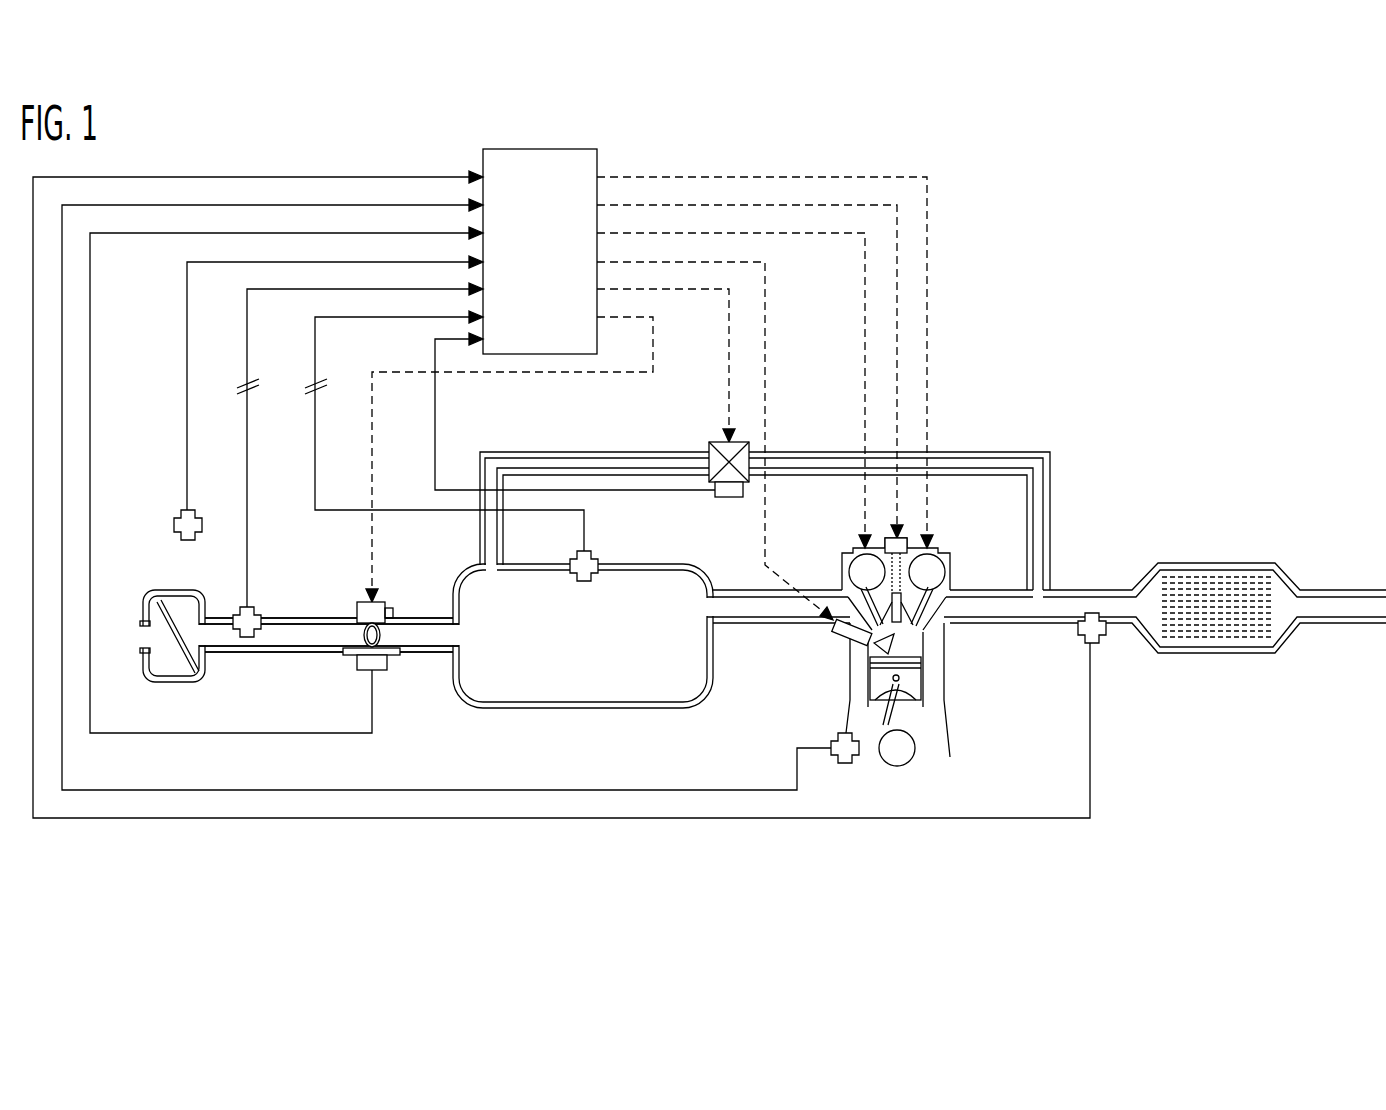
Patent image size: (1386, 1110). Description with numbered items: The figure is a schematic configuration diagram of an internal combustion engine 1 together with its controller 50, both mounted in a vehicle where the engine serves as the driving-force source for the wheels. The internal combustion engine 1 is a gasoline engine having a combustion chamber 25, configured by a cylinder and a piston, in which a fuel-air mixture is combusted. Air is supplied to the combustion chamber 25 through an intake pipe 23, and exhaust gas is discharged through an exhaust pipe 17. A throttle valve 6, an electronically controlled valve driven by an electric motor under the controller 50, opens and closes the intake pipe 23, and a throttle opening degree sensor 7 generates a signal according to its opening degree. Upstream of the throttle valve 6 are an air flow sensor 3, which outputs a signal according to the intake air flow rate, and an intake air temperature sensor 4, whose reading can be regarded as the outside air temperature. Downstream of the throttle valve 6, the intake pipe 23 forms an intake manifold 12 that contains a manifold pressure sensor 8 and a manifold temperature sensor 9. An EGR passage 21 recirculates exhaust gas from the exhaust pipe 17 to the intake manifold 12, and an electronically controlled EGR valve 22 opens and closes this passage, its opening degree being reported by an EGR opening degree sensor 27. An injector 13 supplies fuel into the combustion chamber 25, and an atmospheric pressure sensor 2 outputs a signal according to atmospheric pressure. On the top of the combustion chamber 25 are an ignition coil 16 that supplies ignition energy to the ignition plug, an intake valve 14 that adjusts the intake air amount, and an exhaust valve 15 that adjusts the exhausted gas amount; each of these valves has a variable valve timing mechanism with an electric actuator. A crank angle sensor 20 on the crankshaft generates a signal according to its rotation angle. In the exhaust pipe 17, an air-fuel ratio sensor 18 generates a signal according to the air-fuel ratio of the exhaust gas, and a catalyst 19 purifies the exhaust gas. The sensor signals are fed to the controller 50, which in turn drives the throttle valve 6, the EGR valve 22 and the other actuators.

The internal combustion engine 1 is at (923, 556).
The atmospheric pressure sensor 2 is at (183, 507).
The air flow sensor 3 is at (287, 587).
The intake air temperature sensor 4 is at (263, 610).
The throttle valve 6 is at (378, 600).
The throttle opening degree sensor 7 is at (387, 670).
The manifold pressure sensor 8 is at (611, 539).
The manifold temperature sensor 9 is at (597, 563).
The intake manifold 12 is at (658, 695).
The injector 13 is at (843, 635).
The intake valve 14 is at (858, 568).
The exhaust valve 15 is at (933, 570).
The ignition coil 16 is at (907, 532).
The exhaust pipe 17 is at (1060, 600).
The air-fuel ratio sensor 18 is at (1103, 640).
The catalyst 19 is at (1193, 577).
The crank angle sensor 20 is at (848, 757).
The EGR passage 21 is at (1017, 455).
The EGR valve 22 is at (712, 447).
The intake pipe 23 is at (282, 637).
The combustion chamber 25 is at (925, 647).
The EGR opening degree sensor 27 is at (733, 497).
The controller 50 is at (585, 168).